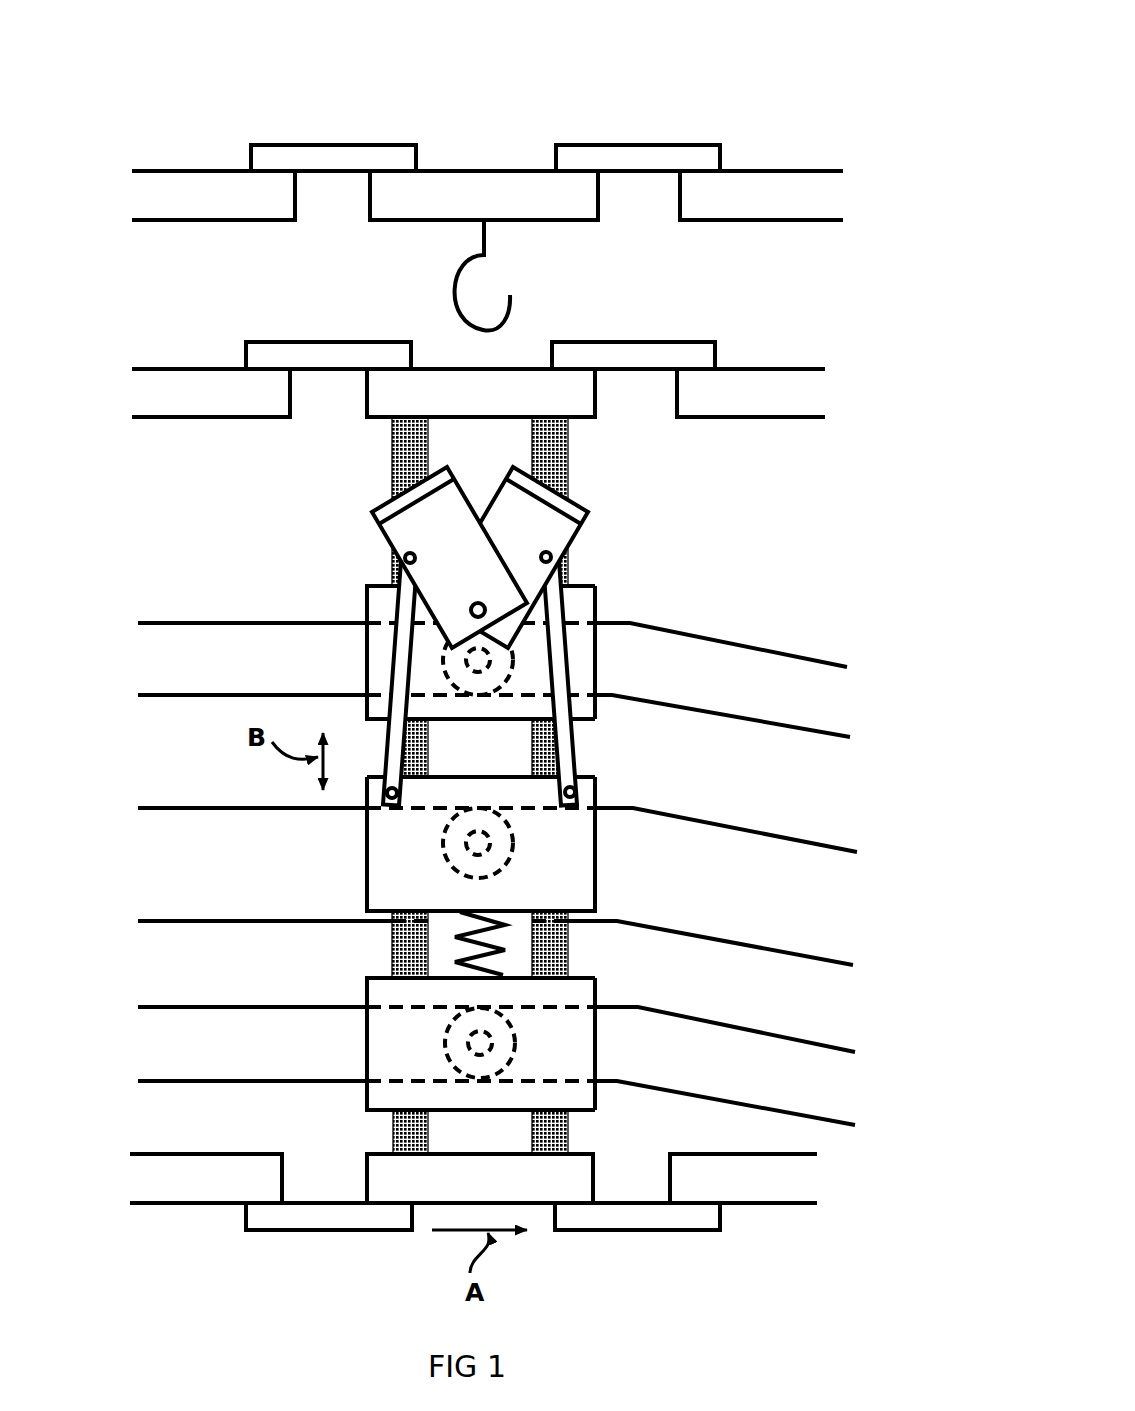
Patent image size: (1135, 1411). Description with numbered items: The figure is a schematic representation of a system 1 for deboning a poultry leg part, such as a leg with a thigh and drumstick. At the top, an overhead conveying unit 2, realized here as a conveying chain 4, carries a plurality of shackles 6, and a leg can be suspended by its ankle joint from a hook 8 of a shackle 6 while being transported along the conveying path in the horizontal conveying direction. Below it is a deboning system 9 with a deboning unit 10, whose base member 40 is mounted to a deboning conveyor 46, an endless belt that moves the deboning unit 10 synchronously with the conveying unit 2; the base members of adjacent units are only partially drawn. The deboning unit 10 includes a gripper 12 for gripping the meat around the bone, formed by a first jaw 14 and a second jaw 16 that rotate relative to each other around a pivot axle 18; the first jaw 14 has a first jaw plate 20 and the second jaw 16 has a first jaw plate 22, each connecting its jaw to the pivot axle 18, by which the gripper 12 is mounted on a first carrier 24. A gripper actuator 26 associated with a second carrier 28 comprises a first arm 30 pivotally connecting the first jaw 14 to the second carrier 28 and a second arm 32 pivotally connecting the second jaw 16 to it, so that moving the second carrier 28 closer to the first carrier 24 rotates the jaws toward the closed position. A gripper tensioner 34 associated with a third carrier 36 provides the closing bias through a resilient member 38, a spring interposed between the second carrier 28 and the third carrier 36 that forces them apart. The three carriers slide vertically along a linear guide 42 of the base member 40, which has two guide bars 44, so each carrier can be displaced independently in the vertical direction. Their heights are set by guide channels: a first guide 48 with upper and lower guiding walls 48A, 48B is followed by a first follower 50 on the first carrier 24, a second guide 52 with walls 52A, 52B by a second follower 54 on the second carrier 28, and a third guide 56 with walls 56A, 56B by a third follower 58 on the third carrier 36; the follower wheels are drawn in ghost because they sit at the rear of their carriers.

The system 1 is at (487, 167).
The conveying unit 2 is at (298, 115).
The conveying chain 4 is at (660, 143).
The shackle 6 is at (205, 170).
The hook 8 is at (508, 313).
The deboning system 9 is at (482, 337).
The deboning unit 10 is at (510, 765).
The gripper 12 is at (401, 524).
The first jaw 14 is at (377, 505).
The second jaw 16 is at (580, 557).
The pivot axle 18 is at (470, 607).
The first jaw plate 20 is at (382, 535).
The first jaw plate 22 is at (573, 545).
The first carrier 24 is at (593, 615).
The gripper actuator 26 is at (551, 854).
The second carrier 28 is at (595, 773).
The first arm 30 is at (479, 657).
The second arm 32 is at (562, 612).
The gripper tensioner 34 is at (464, 1048).
The third carrier 36 is at (597, 990).
The resilient member 38 is at (458, 943).
The base member 40 is at (200, 368).
The linear guide 42 is at (600, 445).
The guide bars 44 is at (412, 432).
The deboning conveyor 46 is at (284, 340).
The first guide 48 is at (502, 698).
The upper guiding wall 48A is at (800, 653).
The lower guiding wall 48B is at (758, 700).
The first follower 50 is at (508, 683).
The second guide 52 is at (510, 898).
The upper guiding wall 52A is at (815, 838).
The lower guiding wall 52B is at (722, 928).
The second follower 54 is at (500, 878).
The third guide 56 is at (506, 1111).
The upper guiding wall 56A is at (805, 1037).
The lower guiding wall 56B is at (847, 1127).
The third follower 58 is at (505, 1067).